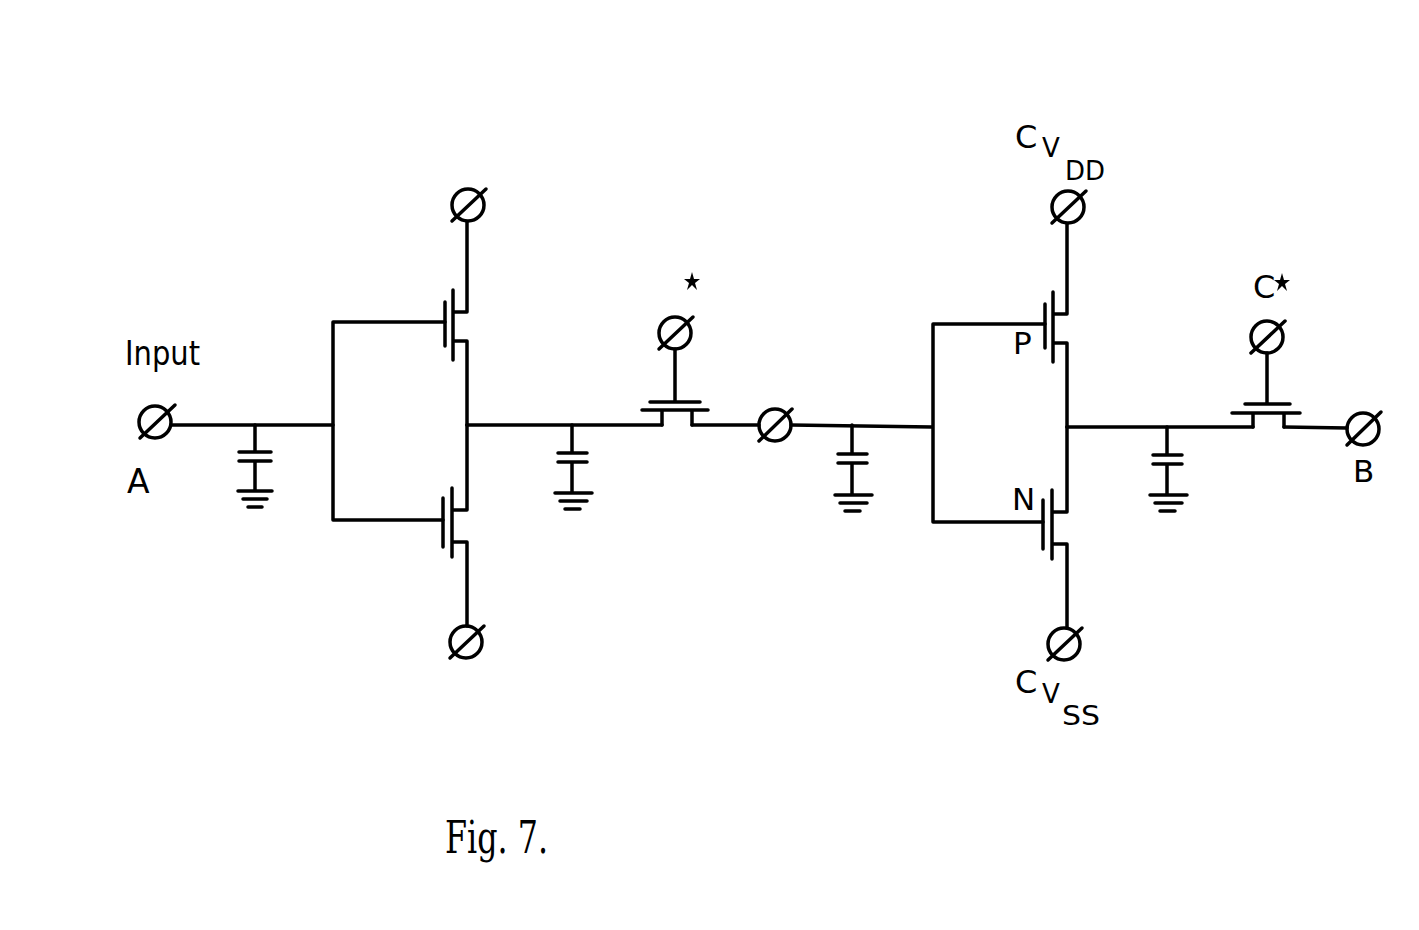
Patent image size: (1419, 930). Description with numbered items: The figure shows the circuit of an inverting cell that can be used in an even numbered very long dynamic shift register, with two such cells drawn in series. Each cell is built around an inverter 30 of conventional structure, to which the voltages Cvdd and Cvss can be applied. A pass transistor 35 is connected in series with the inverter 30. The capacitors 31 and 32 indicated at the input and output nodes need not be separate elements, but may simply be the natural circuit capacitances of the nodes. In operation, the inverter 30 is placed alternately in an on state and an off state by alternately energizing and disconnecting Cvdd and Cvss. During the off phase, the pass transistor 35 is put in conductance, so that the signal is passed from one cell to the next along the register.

The inverter 30 is at (477, 332).
The capacitor 31 is at (223, 457).
The capacitor 32 is at (605, 458).
The pass transistor 35 is at (702, 385).